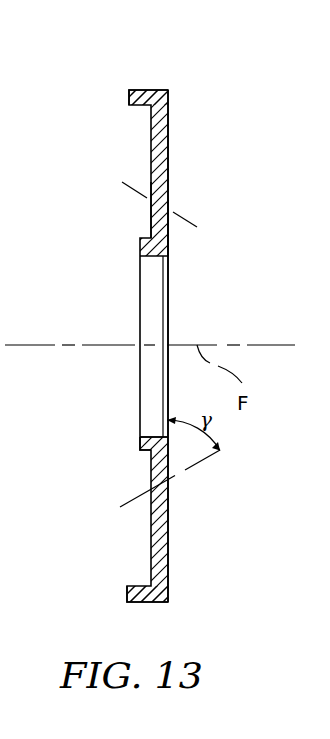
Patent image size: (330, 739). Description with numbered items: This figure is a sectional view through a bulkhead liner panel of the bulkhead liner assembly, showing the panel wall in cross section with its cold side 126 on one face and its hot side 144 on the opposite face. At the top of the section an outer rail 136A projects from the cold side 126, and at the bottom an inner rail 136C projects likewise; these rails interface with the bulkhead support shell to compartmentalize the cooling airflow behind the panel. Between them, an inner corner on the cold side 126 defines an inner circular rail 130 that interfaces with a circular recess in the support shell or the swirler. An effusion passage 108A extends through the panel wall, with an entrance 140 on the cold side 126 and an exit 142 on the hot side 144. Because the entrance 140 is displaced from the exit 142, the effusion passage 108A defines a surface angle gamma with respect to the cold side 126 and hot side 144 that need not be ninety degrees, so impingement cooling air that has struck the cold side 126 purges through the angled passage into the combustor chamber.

The cold side 126 is at (151, 144).
The outer rail 136A is at (129, 95).
The inner rail 136C is at (127, 594).
The hot side 144 is at (168, 133).
The effusion passage 108A is at (167, 200).
The entrance 140 is at (150, 205).
The exit 142 is at (168, 208).
The inner circular rail 130 is at (139, 442).